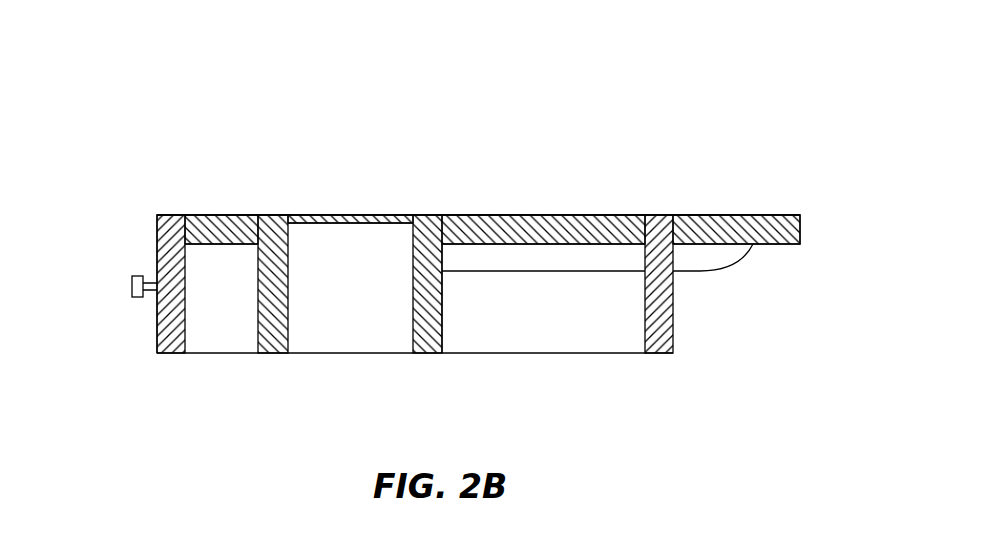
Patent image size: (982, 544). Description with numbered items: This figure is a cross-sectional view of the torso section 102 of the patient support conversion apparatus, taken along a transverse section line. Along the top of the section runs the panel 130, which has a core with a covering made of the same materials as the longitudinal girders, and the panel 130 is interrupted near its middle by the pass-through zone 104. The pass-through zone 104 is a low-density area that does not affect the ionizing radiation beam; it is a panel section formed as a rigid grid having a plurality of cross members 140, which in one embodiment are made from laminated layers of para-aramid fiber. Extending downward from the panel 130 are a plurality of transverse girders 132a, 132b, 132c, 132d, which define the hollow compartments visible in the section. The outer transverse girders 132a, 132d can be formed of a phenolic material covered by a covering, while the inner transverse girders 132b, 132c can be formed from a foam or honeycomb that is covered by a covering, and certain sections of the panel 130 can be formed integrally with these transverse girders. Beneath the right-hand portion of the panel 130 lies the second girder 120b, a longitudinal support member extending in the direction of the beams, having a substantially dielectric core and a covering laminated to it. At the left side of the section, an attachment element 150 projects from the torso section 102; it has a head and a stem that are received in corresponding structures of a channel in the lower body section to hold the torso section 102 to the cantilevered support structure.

The torso section 102 is at (672, 133).
The pass-through zone 104 is at (378, 215).
The second girder 120b is at (543, 335).
The panel 130 is at (228, 216).
The transverse girder 132a is at (176, 347).
The transverse girder 132b is at (268, 347).
The transverse girder 132c is at (425, 347).
The transverse girder 132d is at (661, 345).
The cross members 140 is at (365, 215).
The attachment element 150 is at (128, 288).